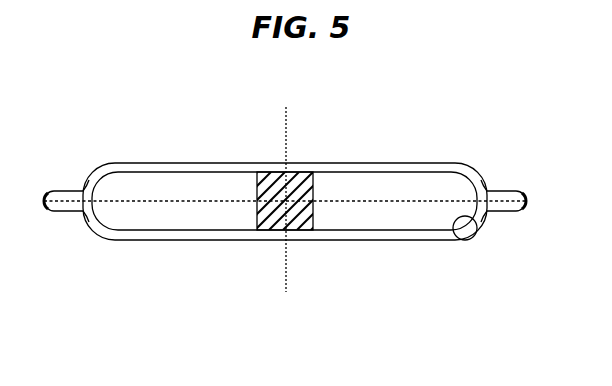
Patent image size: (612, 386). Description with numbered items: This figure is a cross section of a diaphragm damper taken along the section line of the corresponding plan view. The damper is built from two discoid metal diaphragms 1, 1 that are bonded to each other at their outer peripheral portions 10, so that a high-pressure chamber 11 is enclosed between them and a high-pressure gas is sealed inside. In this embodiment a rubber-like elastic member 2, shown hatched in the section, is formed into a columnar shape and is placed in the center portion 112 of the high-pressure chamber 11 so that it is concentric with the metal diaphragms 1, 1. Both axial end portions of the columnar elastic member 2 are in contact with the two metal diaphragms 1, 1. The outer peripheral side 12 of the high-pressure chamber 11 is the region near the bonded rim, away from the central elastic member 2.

The metal diaphragm 1 is at (417, 163).
The rubber-like elastic member 2 is at (275, 173).
The outer peripheral portion 10 is at (500, 191).
The high-pressure chamber 11 is at (376, 208).
The outer peripheral side 12 is at (458, 240).
The center portion 112 is at (253, 242).